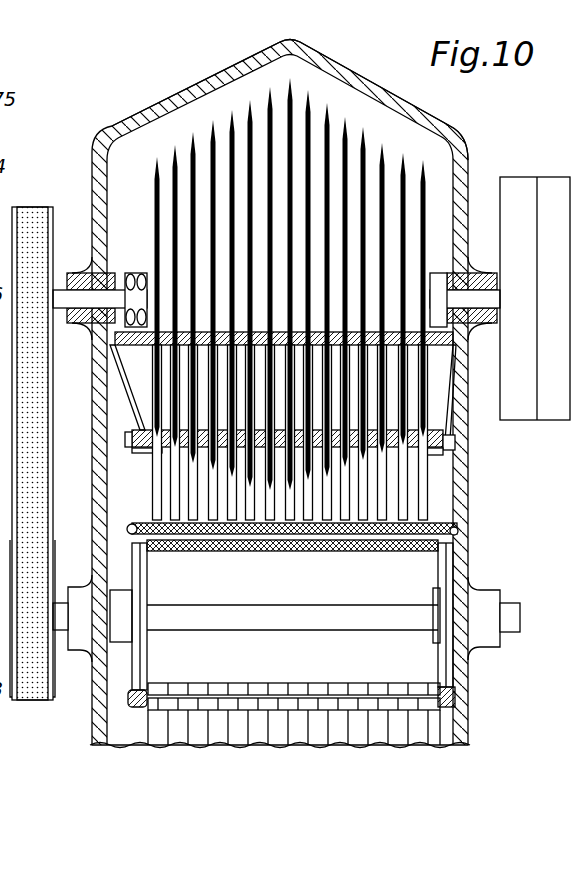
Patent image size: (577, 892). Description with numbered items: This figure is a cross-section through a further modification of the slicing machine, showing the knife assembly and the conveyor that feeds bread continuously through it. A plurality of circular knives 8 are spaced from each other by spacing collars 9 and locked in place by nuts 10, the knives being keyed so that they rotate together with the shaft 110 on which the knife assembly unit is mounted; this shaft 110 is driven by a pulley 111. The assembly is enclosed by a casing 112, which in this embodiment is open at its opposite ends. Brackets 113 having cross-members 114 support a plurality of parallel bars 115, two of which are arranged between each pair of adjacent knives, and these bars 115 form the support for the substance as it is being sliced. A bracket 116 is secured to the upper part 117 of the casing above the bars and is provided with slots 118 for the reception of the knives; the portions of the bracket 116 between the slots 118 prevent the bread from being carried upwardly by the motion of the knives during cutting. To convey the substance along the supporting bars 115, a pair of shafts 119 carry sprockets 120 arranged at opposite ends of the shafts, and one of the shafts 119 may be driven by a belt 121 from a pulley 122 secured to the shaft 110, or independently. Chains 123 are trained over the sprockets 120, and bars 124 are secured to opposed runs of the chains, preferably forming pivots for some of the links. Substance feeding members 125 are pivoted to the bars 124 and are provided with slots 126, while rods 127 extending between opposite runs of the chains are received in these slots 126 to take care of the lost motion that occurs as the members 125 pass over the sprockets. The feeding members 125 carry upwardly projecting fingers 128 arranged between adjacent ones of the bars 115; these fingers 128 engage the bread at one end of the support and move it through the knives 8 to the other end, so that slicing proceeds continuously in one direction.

The circular knives 8 is at (402, 156).
The spacing collars 9 is at (414, 273).
The nuts 10 is at (114, 262).
The shaft 110 is at (62, 296).
The pulley 111 is at (540, 184).
The casing 112 is at (462, 732).
The brackets 113 is at (129, 404).
The cross-members 114 is at (141, 452).
The parallel bars 115 is at (406, 455).
The bracket 116 is at (150, 339).
The upper part of the casing 117 is at (457, 142).
The slots 118 is at (172, 278).
The shafts 119 is at (243, 618).
The sprockets 120 is at (146, 662).
The belt 121 is at (40, 498).
The pulley 122 is at (128, 402).
The chains 123 is at (458, 698).
The bars 124 is at (340, 699).
The substance feeding members 125 is at (427, 493).
The slots 126 is at (422, 550).
The rods 127 is at (457, 532).
The fingers 128 is at (150, 353).